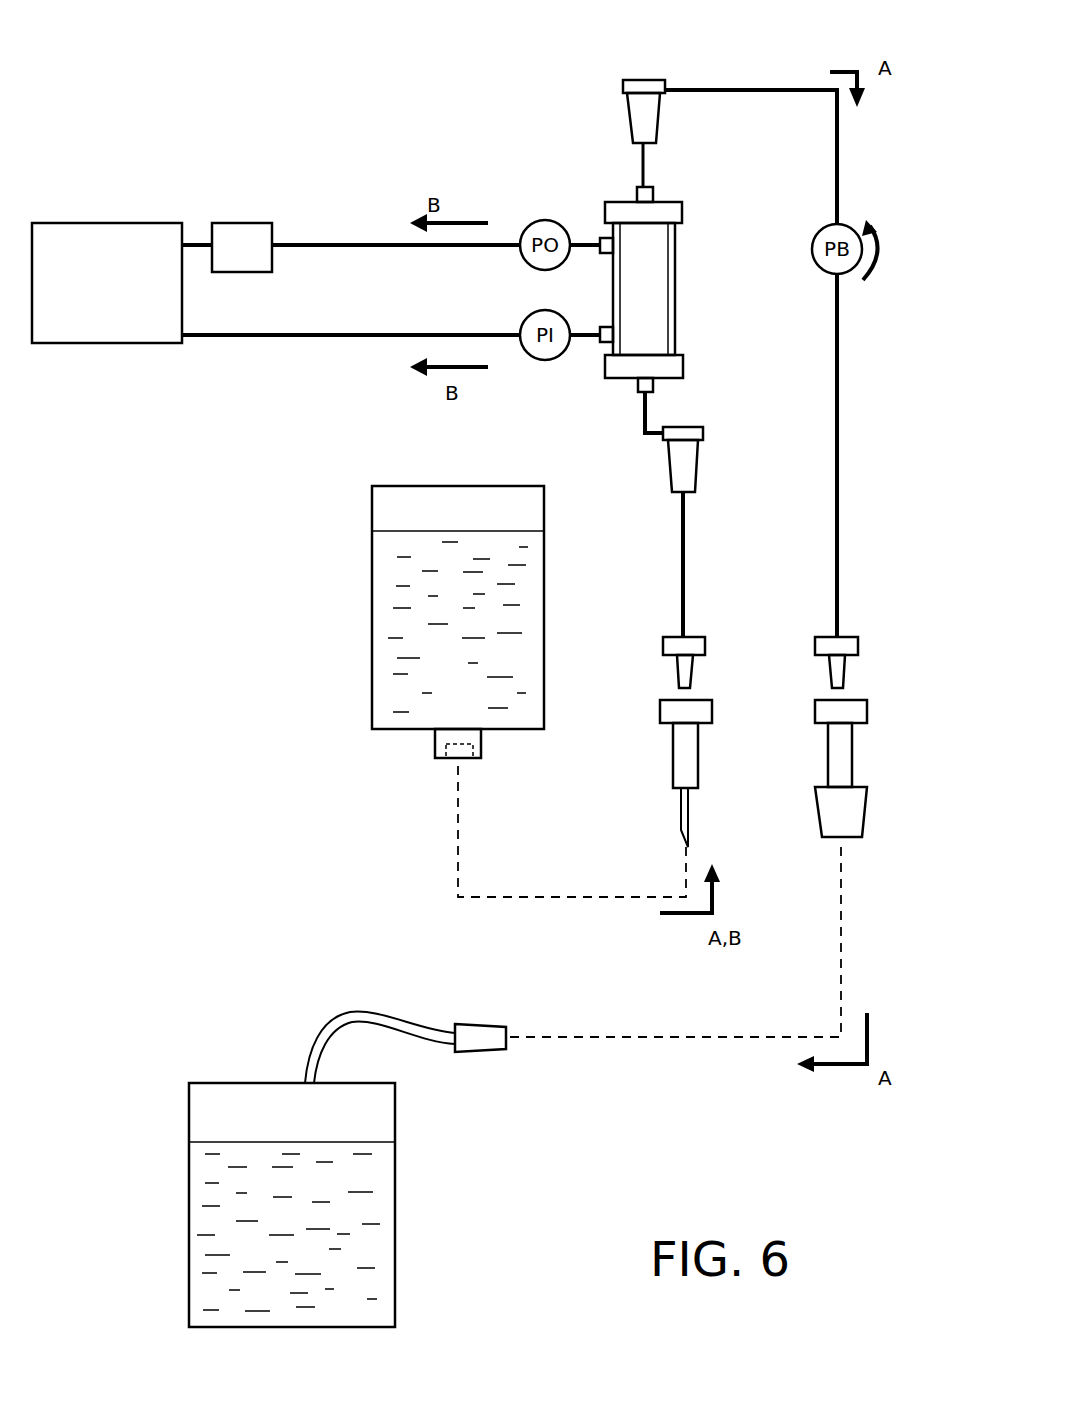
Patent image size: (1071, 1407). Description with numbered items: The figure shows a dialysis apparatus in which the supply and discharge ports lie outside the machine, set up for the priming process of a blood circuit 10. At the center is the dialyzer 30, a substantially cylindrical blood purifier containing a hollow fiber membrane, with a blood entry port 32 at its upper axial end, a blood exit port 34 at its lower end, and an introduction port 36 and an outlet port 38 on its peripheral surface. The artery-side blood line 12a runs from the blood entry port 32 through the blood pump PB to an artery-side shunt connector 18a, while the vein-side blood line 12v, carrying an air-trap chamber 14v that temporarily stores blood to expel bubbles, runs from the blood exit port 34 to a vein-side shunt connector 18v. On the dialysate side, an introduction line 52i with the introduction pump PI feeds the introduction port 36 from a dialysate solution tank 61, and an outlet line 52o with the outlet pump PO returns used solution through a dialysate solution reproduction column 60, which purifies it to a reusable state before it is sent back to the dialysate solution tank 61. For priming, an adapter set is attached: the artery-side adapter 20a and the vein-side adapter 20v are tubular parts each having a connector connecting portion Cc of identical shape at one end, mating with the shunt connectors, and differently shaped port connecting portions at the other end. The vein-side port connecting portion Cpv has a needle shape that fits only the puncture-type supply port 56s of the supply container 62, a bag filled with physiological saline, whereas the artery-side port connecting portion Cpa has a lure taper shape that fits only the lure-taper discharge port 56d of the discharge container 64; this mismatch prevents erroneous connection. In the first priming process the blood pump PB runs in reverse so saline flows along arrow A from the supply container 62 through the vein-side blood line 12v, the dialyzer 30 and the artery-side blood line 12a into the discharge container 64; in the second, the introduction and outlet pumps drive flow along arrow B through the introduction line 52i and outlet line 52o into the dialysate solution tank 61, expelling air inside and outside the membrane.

The blood circuit 10 is at (718, 67).
The artery-side blood line 12a is at (838, 402).
The vein-side blood line 12v is at (683, 603).
The air-trap chamber 14v is at (630, 108).
The artery-side shunt connector 18a is at (858, 645).
The vein-side shunt connector 18v is at (663, 645).
The artery-side adapter 20a is at (852, 753).
The vein-side adapter 20v is at (672, 753).
The dialyzer 30 is at (675, 302).
The blood entry port 32 is at (655, 192).
The blood exit port 34 is at (655, 383).
The introduction port 36 is at (603, 343).
The outlet port 38 is at (603, 238).
The outlet line 52o is at (362, 244).
The introduction line 52i is at (372, 334).
The supply port 56s is at (452, 760).
The discharge port 56d is at (493, 1024).
The dialysate solution reproduction column 60 is at (237, 222).
The dialysate solution tank 61 is at (125, 222).
The supply container 62 is at (372, 578).
The discharge container 64 is at (189, 1215).
The connector connecting portion Cc is at (660, 715).
The vein-side port connecting portion Cpv is at (680, 807).
The artery-side port connecting portion Cpa is at (865, 810).